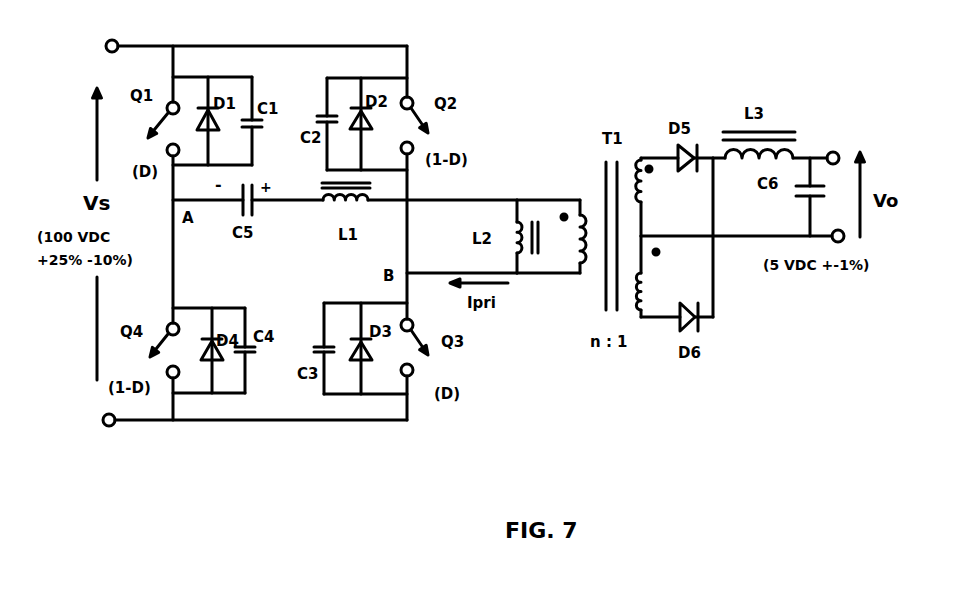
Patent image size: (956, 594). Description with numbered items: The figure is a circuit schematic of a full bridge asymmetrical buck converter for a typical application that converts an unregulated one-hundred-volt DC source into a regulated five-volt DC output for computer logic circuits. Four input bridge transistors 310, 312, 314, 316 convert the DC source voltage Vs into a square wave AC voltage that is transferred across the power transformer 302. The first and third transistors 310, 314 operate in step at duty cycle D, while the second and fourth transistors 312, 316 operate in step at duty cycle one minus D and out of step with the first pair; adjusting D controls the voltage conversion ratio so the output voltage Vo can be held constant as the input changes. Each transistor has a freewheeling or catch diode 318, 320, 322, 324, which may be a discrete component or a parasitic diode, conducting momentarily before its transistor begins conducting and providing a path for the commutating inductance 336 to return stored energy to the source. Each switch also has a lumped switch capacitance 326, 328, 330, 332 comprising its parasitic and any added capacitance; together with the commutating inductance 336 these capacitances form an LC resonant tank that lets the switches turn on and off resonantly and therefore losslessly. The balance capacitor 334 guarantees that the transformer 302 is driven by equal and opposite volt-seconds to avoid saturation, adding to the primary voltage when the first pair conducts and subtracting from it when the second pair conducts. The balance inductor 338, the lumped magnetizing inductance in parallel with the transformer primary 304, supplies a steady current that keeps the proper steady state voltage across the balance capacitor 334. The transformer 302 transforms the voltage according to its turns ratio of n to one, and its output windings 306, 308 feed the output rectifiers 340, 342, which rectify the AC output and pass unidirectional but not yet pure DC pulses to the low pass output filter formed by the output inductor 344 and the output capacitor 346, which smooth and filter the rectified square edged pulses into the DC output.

The power transformer 302 is at (610, 212).
The primary winding 304 is at (557, 223).
The first secondary winding 306 is at (670, 197).
The second secondary winding 308 is at (668, 276).
The input bridge transistor 310 is at (141, 129).
The input bridge transistor 312 is at (443, 125).
The input bridge transistor 314 is at (452, 347).
The input bridge transistor 316 is at (139, 350).
The freewheeling or catch diode 318 is at (212, 111).
The freewheeling or catch diode 320 is at (367, 114).
The freewheeling or catch diode 322 is at (365, 339).
The freewheeling or catch diode 324 is at (209, 341).
The switch capacitance 326 is at (271, 121).
The switch capacitance 328 is at (318, 124).
The switch capacitance 330 is at (314, 354).
The switch capacitance 332 is at (267, 349).
The balance capacitor 334 is at (248, 223).
The commutating inductance 336 is at (419, 222).
The balance inductor 338 is at (500, 236).
The output rectifier 340 is at (685, 136).
The output rectifier 342 is at (690, 342).
The output inductor 344 is at (770, 120).
The output capacitor C6 346 is at (788, 197).